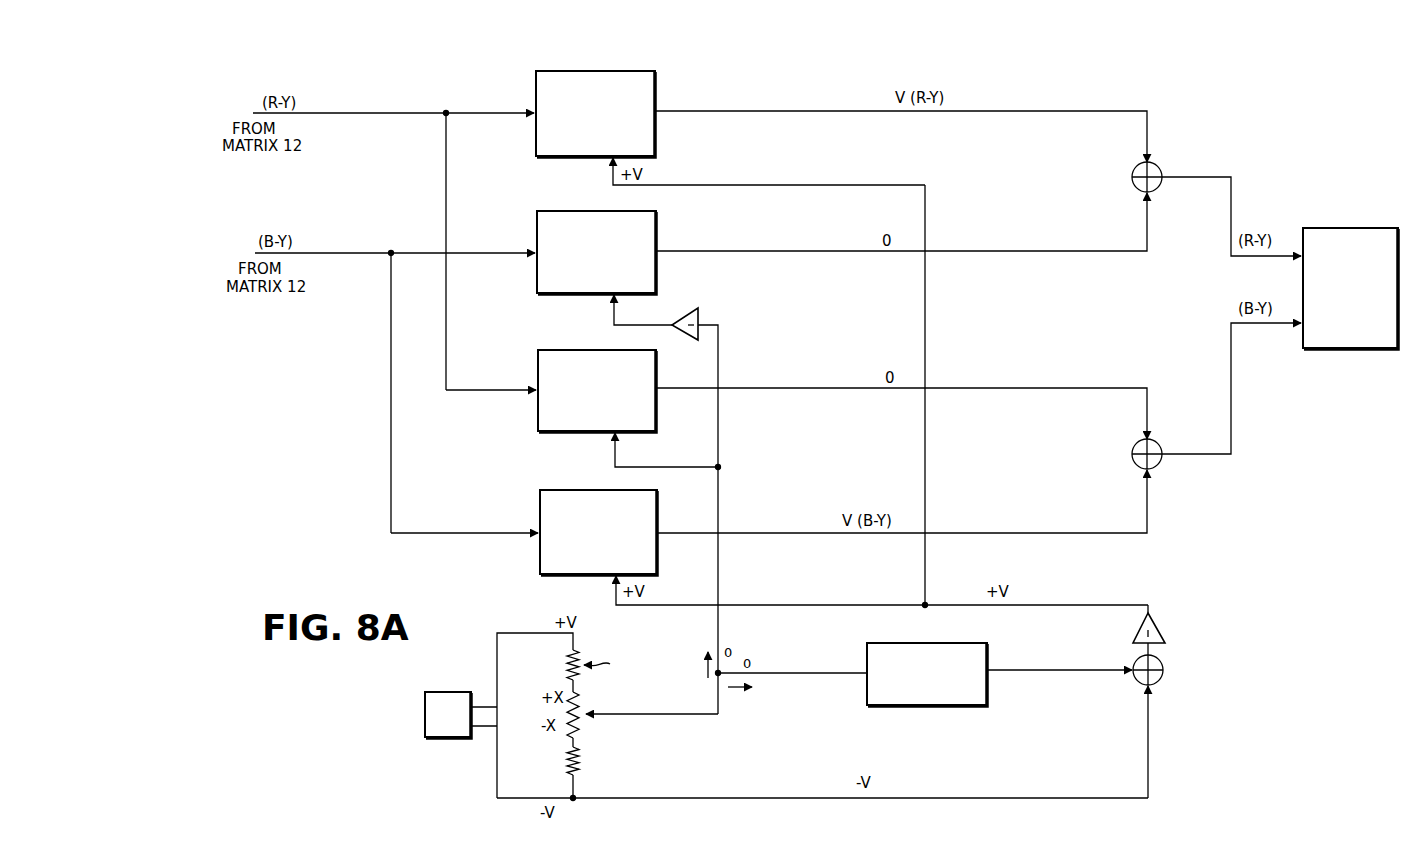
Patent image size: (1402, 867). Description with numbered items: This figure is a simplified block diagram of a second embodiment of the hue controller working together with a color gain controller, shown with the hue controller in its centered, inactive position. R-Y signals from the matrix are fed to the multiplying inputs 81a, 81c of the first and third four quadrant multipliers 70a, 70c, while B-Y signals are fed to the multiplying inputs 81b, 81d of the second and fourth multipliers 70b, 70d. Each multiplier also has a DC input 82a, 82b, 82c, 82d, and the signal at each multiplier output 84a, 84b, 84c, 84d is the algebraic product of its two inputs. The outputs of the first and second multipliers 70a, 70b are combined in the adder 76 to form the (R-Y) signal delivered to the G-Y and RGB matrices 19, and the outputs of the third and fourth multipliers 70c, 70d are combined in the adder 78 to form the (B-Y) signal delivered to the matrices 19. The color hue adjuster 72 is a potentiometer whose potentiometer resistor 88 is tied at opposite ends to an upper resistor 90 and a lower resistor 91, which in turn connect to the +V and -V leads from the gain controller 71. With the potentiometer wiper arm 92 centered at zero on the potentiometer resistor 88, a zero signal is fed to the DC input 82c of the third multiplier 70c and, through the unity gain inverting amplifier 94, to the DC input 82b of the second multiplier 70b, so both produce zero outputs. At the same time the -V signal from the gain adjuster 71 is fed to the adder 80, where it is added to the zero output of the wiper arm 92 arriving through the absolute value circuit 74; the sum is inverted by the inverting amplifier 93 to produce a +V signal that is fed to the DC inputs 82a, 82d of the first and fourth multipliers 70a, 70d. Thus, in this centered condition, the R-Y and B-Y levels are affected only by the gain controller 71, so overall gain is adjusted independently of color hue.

The multiplying input 81a is at (534, 113).
The multiplying input 81b is at (535, 253).
The multiplying input 81c is at (536, 390).
The multiplying input 81d is at (538, 533).
The first multiplier 70a is at (638, 105).
The second multiplier 70b is at (632, 226).
The third multiplier 70c is at (642, 372).
The fourth multiplier 70d is at (644, 524).
The multiplier output 84a is at (655, 115).
The multiplier output 84b is at (656, 250).
The multiplier output 84c is at (657, 390).
The multiplier output 84d is at (657, 536).
The DC input 82a is at (608, 162).
The DC input 82b is at (608, 300).
The DC input 82c is at (610, 438).
The DC input 82d is at (610, 580).
The unity gain inverting amplifier 94 is at (690, 308).
The adder 76 is at (1158, 170).
The adder 78 is at (1160, 460).
The matrix 19 is at (1338, 337).
The inverting amplifier 93 is at (1162, 628).
The adder 80 is at (1160, 672).
The absolute value circuit 74 is at (980, 667).
The color saturation gain adjuster 71 is at (424, 724).
The color hue adjuster 72 is at (608, 664).
The potentiometer wiper arm 92 is at (650, 714).
The upper resistor 90 is at (570, 665).
The potentiometer resistor 88 is at (580, 728).
The lower resistor 91 is at (571, 762).